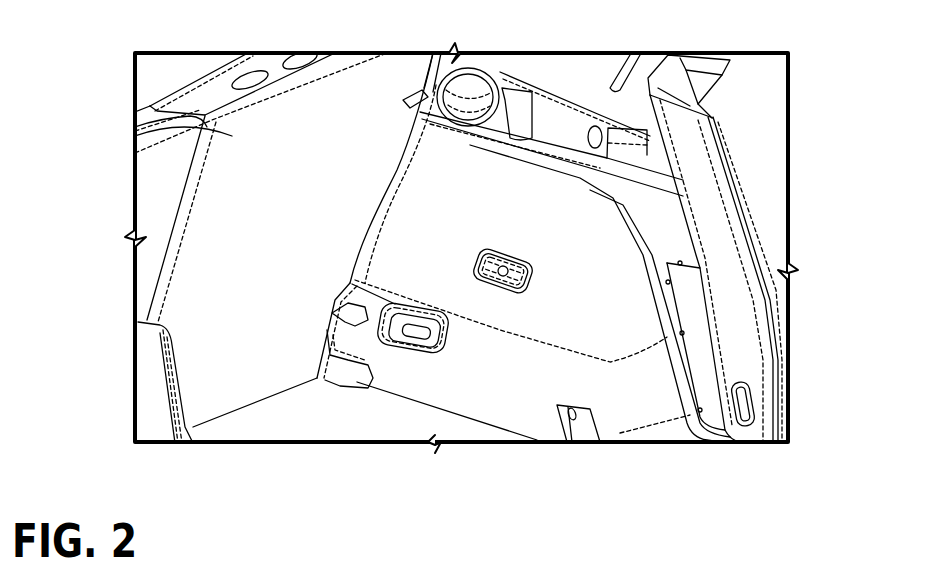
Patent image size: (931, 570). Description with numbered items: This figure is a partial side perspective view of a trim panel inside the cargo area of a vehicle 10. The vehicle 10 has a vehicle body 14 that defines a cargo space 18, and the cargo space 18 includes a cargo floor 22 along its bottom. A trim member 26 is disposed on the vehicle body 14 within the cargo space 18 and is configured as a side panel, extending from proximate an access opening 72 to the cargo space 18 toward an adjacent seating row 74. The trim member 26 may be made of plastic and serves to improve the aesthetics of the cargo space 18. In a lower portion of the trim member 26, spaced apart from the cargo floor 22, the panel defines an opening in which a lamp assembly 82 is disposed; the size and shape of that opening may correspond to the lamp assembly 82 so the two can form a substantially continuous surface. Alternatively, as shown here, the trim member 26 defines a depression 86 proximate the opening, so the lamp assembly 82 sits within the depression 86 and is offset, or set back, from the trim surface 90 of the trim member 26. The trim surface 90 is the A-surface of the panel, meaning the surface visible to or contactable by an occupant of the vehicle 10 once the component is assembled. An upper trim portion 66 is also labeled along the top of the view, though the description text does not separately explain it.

The vehicle 10 is at (798, 81).
The vehicle body 14 is at (710, 70).
The cargo space 18 is at (248, 295).
The cargo floor 22 is at (325, 413).
The trim member 26 is at (662, 363).
The upper trim panel 66 is at (165, 72).
The access opening 72 is at (747, 197).
The adjacent seating row 74 is at (230, 128).
The lamp assembly 82 is at (533, 290).
The depression 86 is at (528, 292).
The trim surface 90 is at (458, 191).